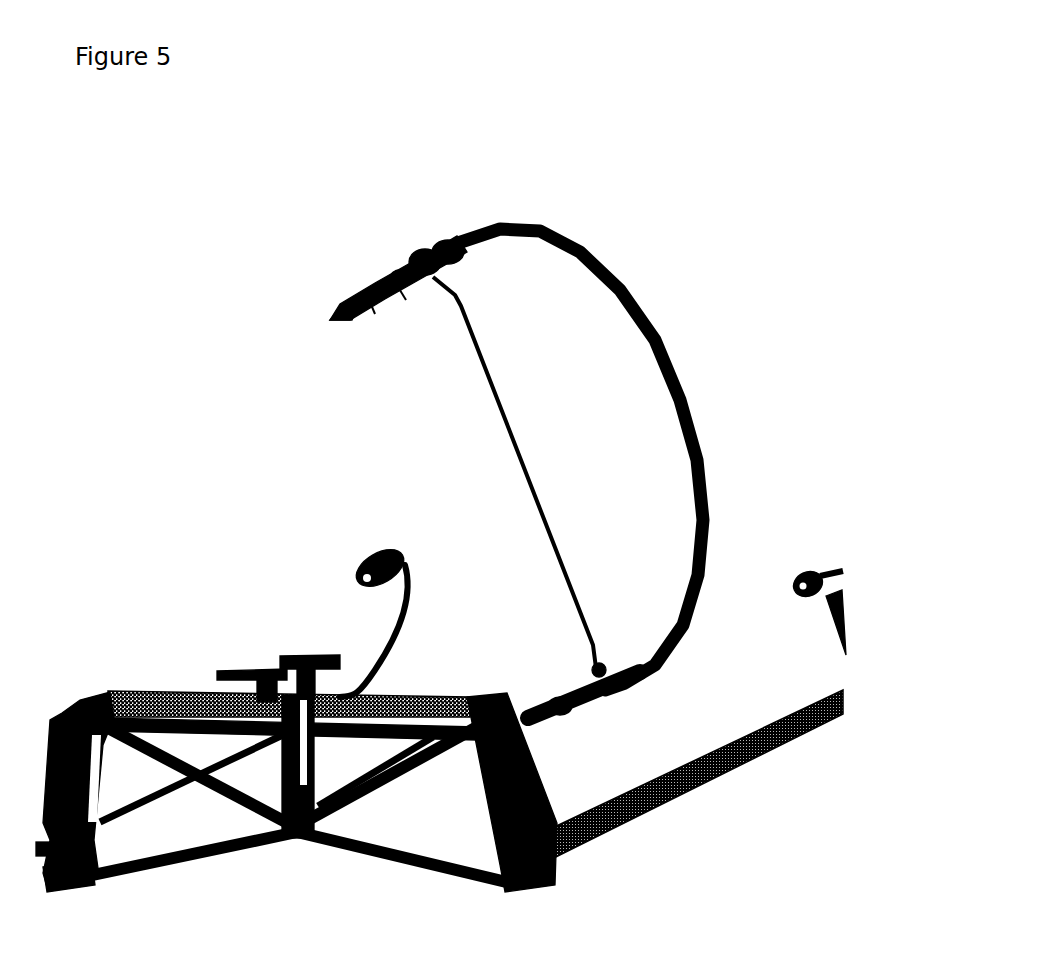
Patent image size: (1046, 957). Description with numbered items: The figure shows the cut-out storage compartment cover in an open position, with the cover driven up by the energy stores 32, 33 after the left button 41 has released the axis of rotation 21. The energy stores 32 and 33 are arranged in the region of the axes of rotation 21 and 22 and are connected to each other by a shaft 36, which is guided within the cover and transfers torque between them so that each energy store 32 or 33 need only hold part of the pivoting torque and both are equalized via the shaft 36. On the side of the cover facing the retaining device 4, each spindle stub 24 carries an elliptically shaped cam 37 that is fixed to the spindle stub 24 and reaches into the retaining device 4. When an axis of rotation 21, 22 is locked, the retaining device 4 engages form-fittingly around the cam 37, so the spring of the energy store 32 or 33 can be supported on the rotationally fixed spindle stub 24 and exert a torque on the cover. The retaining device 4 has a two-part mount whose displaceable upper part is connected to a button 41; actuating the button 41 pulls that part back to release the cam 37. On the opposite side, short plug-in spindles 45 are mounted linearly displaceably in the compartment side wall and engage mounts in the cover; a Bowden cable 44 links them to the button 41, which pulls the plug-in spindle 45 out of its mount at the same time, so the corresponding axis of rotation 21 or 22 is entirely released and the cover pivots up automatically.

The retaining device 4 is at (77, 683).
The axis of rotation 21 is at (30, 748).
The axis of rotation 22 is at (690, 636).
The spindle stub 24 is at (387, 308).
The energy store 32 is at (390, 270).
The energy store 33 is at (583, 710).
The shaft 36 is at (623, 300).
The cam 37 is at (333, 313).
The button 41 is at (257, 668).
The Bowden cable 44 is at (408, 590).
The plug-in spindle 45 is at (360, 570).